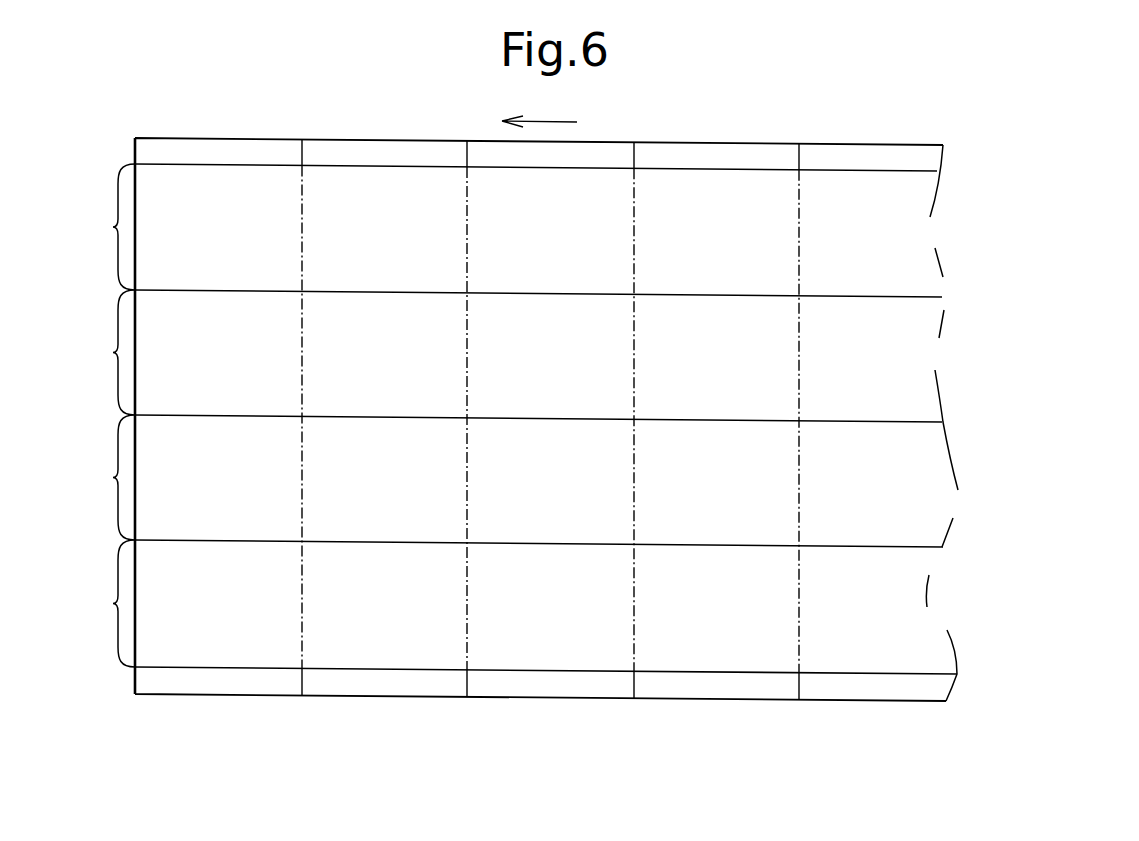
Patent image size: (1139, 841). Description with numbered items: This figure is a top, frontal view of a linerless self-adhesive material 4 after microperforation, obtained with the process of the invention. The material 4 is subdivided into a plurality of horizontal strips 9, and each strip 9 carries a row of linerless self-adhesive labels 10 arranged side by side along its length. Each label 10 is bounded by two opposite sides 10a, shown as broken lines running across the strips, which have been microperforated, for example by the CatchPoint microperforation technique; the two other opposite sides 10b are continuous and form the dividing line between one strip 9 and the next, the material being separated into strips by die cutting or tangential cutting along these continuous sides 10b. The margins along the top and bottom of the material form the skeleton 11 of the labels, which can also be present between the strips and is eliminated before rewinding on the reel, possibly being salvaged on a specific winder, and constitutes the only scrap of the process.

The linerless self-adhesive material 4 is at (1030, 153).
The strip 9 is at (110, 227).
The linerless self-adhesive label 10 is at (899, 625).
The microperforated opposite sides 10a is at (303, 647).
The continuous opposite sides 10b is at (898, 168).
The skeleton 11 is at (390, 155).